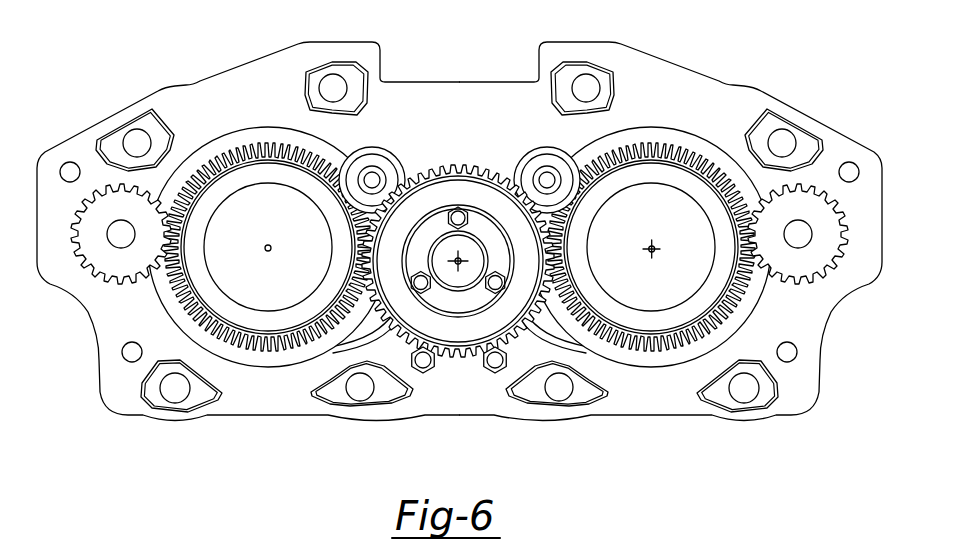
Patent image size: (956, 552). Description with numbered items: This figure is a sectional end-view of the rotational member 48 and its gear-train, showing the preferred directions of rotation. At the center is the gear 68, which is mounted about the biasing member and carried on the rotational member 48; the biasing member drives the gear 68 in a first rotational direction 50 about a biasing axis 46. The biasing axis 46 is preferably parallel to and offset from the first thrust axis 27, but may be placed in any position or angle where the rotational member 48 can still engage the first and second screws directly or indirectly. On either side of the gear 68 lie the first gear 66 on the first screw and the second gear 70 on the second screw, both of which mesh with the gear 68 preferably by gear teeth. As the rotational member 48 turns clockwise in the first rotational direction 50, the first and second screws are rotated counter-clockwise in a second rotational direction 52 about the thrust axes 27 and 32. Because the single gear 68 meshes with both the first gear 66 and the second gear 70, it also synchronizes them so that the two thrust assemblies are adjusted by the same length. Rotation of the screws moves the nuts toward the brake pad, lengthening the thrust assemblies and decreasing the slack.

The first thrust axis 27 is at (653, 256).
The thrust axis 32 is at (271, 250).
The biasing axis 46 is at (458, 302).
The rotational member 48 is at (487, 391).
The first rotational direction 50 is at (458, 248).
The second rotational direction 52 is at (467, 199).
The first gear 66 is at (182, 295).
The gear 68 is at (458, 310).
The second gear 70 is at (738, 297).